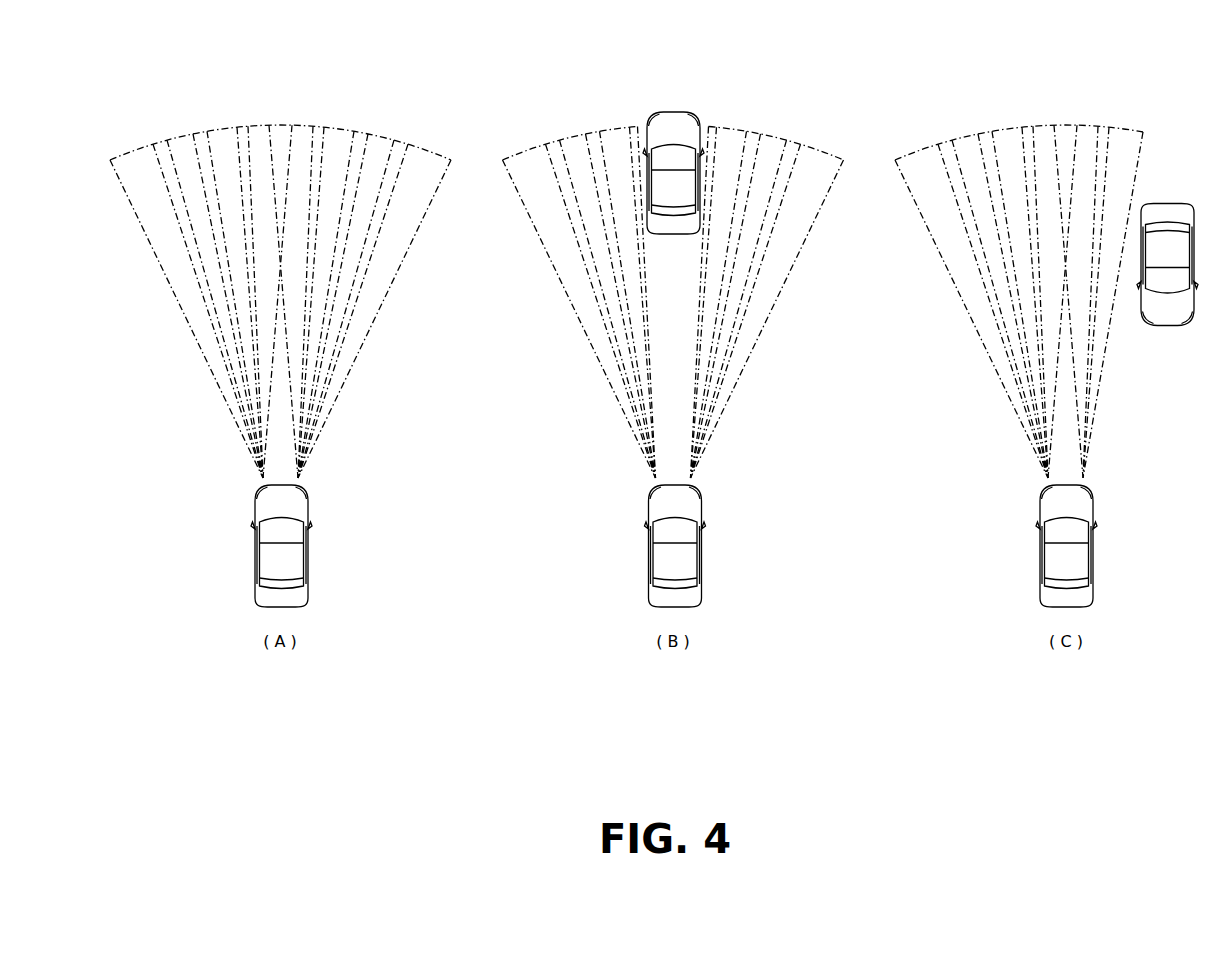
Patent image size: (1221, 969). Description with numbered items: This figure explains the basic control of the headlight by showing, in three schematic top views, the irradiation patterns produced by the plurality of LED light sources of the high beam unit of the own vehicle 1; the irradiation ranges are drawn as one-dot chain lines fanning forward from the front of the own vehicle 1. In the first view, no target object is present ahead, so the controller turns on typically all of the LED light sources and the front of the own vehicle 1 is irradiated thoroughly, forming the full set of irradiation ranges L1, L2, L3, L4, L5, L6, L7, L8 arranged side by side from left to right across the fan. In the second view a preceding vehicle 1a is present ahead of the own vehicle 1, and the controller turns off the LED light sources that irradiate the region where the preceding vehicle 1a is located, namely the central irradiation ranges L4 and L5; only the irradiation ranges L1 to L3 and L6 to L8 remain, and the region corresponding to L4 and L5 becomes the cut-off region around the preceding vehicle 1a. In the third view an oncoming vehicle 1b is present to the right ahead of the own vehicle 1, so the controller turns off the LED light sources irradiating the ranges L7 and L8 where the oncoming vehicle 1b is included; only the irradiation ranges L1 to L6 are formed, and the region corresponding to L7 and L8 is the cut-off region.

The own vehicle 1 is at (252, 543).
The preceding vehicle 1a is at (672, 110).
The oncoming vehicle 1b is at (1167, 328).
The irradiation range L1 is at (133, 150).
The irradiation range L2 is at (179, 136).
The irradiation range L3 is at (221, 130).
The irradiation range L4 is at (272, 125).
The irradiation range L5 is at (301, 125).
The irradiation range L6 is at (339, 128).
The irradiation range L7 is at (385, 138).
The irradiation range L8 is at (426, 150).